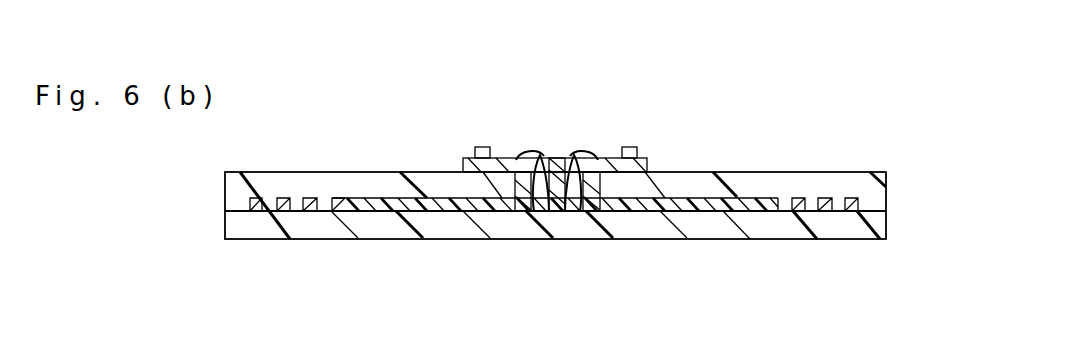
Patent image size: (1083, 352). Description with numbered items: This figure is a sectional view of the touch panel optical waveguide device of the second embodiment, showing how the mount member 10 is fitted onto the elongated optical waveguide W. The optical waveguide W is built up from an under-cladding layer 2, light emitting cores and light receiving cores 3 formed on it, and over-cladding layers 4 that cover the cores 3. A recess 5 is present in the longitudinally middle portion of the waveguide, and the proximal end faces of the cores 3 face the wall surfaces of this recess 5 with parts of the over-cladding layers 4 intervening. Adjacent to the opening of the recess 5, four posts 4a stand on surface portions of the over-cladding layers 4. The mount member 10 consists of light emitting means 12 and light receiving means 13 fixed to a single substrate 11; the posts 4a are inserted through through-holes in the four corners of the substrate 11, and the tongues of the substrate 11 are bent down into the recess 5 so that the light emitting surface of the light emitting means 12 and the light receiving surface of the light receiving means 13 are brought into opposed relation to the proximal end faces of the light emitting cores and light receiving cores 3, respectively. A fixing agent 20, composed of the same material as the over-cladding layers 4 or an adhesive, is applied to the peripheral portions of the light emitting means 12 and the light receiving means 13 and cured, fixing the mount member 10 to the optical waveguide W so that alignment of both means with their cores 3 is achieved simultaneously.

The under-cladding layer 2 is at (317, 228).
The cores 3 is at (353, 200).
The over-cladding layers 4 is at (423, 180).
The posts 4a is at (481, 150).
The recess 5 is at (552, 238).
The mount member 10 is at (632, 47).
The substrate 11 is at (554, 158).
The light emitting means 12 is at (574, 156).
The light receiving means 13 is at (540, 156).
The fixing agent 20 is at (528, 152).
The optical waveguide W is at (852, 166).